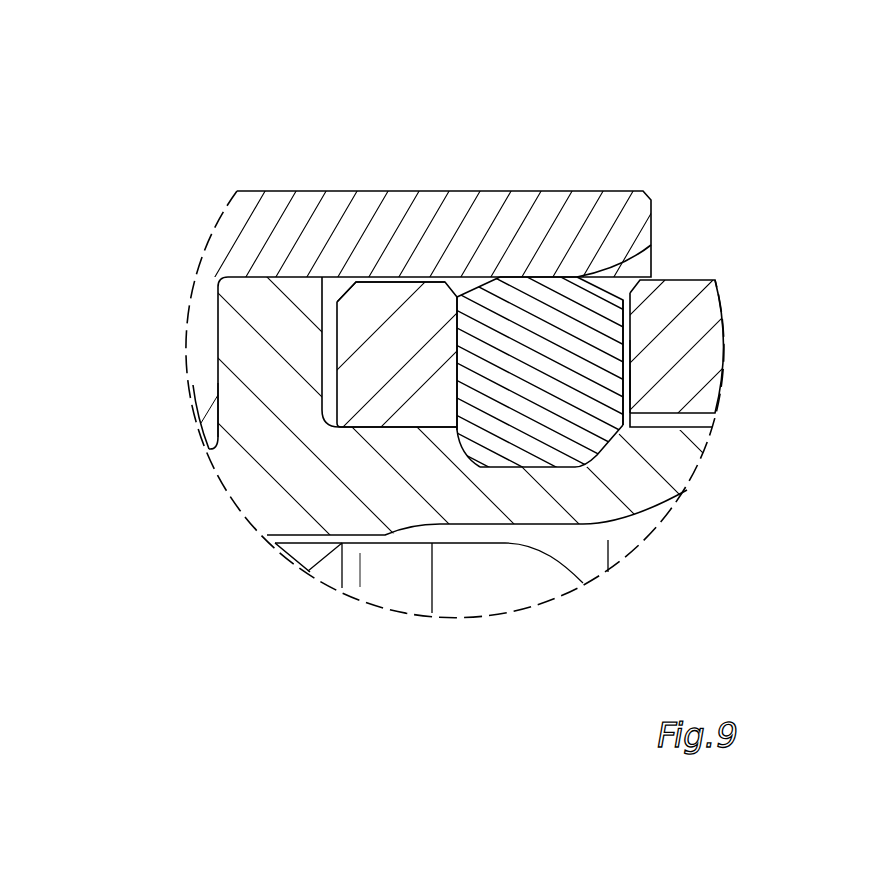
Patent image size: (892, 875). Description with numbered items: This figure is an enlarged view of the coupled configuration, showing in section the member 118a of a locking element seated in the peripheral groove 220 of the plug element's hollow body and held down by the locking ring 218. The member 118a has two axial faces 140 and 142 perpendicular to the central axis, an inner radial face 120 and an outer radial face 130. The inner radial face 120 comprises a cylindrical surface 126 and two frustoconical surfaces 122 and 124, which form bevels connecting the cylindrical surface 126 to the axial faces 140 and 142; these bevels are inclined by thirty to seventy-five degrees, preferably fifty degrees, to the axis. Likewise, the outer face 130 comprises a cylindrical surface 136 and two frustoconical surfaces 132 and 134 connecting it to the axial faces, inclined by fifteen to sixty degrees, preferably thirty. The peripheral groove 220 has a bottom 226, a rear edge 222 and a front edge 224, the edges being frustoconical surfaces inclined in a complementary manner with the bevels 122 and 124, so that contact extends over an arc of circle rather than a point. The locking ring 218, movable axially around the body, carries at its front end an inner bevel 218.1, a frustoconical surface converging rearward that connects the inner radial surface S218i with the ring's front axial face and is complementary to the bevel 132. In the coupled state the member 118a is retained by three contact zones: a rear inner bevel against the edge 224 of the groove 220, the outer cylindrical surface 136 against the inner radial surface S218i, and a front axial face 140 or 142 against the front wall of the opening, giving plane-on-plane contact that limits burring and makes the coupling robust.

The locking ring 218 is at (292, 222).
The inner bevel 218.1 is at (651, 247).
The inner radial surface S218i is at (379, 304).
The outer radial face 130 is at (477, 40).
The frustoconical surface 132 is at (475, 275).
The cylindrical surface 136 is at (539, 271).
The frustoconical surface 134 is at (612, 275).
The axial face 140 is at (630, 320).
The member 118a is at (631, 367).
The axial face 142 is at (630, 375).
The peripheral groove 220 is at (98, 289).
The front edge 224 is at (450, 328).
The bottom 226 is at (598, 448).
The rear edge 222 is at (450, 432).
The inner radial face 120 is at (493, 720).
The frustoconical surface 122 is at (468, 451).
The cylindrical surface 126 is at (520, 474).
The frustoconical surface 124 is at (619, 453).